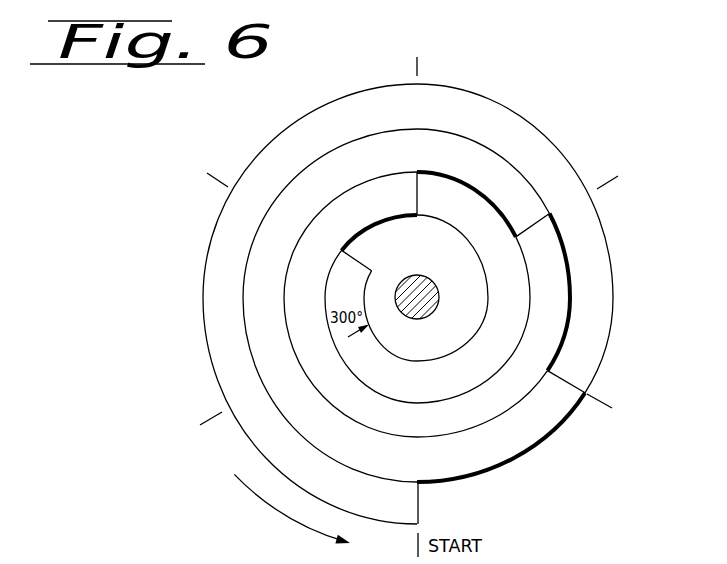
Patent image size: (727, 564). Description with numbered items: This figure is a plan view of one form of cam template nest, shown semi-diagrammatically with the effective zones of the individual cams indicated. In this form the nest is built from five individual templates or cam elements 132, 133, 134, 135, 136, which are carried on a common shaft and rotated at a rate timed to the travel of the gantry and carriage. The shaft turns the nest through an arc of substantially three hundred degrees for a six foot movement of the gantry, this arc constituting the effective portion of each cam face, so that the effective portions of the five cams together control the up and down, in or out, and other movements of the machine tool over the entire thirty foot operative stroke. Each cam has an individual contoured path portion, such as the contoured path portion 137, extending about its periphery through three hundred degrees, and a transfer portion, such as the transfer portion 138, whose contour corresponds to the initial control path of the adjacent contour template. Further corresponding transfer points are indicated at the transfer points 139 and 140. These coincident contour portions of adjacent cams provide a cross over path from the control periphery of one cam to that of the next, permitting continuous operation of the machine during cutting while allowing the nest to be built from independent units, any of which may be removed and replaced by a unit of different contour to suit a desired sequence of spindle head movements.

The cam element 132 is at (437, 359).
The cam element 133 is at (420, 401).
The cam element 134 is at (406, 436).
The cam element 135 is at (388, 479).
The cam element 136 is at (370, 521).
The contoured path portion 137 is at (205, 352).
The transfer portion 138 is at (513, 458).
The transfer point 139 is at (572, 293).
The transfer point 140 is at (471, 187).